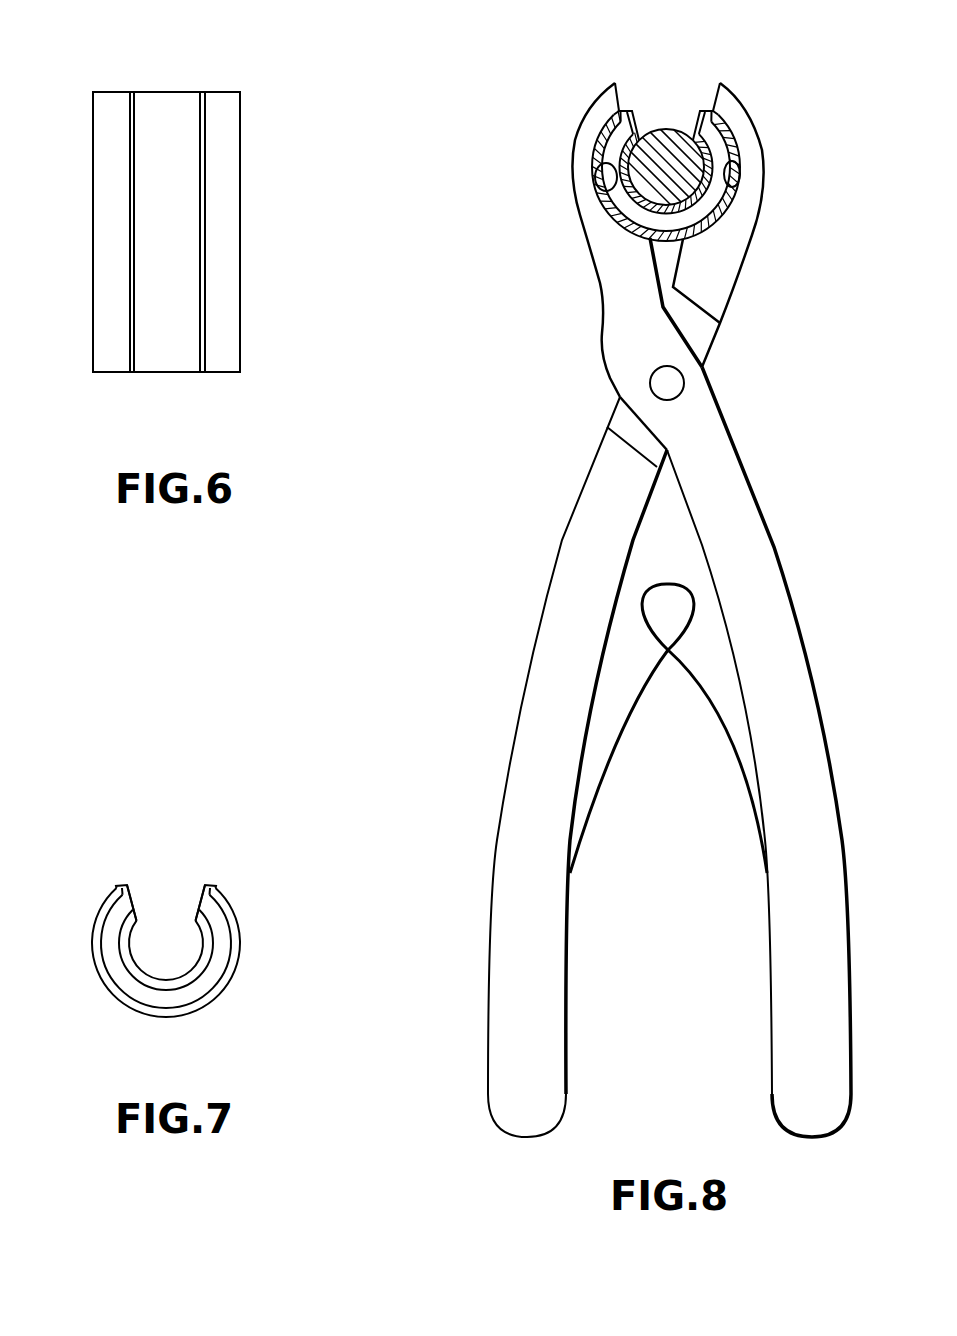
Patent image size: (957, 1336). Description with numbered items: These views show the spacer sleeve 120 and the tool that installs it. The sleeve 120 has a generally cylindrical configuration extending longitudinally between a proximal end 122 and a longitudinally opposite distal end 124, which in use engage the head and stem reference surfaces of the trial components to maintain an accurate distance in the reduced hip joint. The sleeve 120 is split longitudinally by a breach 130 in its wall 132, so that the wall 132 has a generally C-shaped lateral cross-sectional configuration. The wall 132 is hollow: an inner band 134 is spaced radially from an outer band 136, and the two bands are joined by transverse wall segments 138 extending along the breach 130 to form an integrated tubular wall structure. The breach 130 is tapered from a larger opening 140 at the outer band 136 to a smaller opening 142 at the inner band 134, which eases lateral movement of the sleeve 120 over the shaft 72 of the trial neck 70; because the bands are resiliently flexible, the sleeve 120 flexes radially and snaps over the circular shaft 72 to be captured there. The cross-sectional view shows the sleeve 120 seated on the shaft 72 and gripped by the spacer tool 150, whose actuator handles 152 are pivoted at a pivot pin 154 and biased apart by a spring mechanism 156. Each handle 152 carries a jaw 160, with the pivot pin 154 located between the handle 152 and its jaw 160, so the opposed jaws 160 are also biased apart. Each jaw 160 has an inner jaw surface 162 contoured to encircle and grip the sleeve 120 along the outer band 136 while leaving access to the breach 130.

In FIG. 8, the trial neck 70 is at (680, 118).
In FIG. 8, the shaft 72 is at (686, 133).
In FIG. 6, the sleeve 120 is at (241, 173).
In FIG. 8, the sleeve 120 is at (718, 237).
In FIG. 6, the proximal end 122 is at (227, 92).
In FIG. 6, the distal end 124 is at (223, 374).
In FIG. 6, the breach 130 is at (134, 350).
In FIG. 7, the breach 130 is at (181, 929).
In FIG. 6, the wall 132 is at (228, 282).
In FIG. 7, the wall 132 is at (252, 902).
In FIG. 7, the inner band 134 is at (141, 984).
In FIG. 7, the outer band 136 is at (173, 1017).
In FIG. 8, the outer band 136 is at (614, 237).
In FIG. 7, the wall segments 138 is at (120, 917).
In FIG. 7, the larger opening 140 is at (126, 884).
In FIG. 7, the smaller opening 142 is at (164, 938).
In FIG. 8, the spacer tool 150 is at (630, 584).
In FIG. 8, the actuator handles 152 is at (497, 1018).
In FIG. 8, the pivot pin 154 is at (655, 388).
In FIG. 8, the spring mechanism 156 is at (671, 660).
In FIG. 8, the jaws 160 is at (605, 97).
In FIG. 8, the inner jaw surface 162 is at (601, 185).